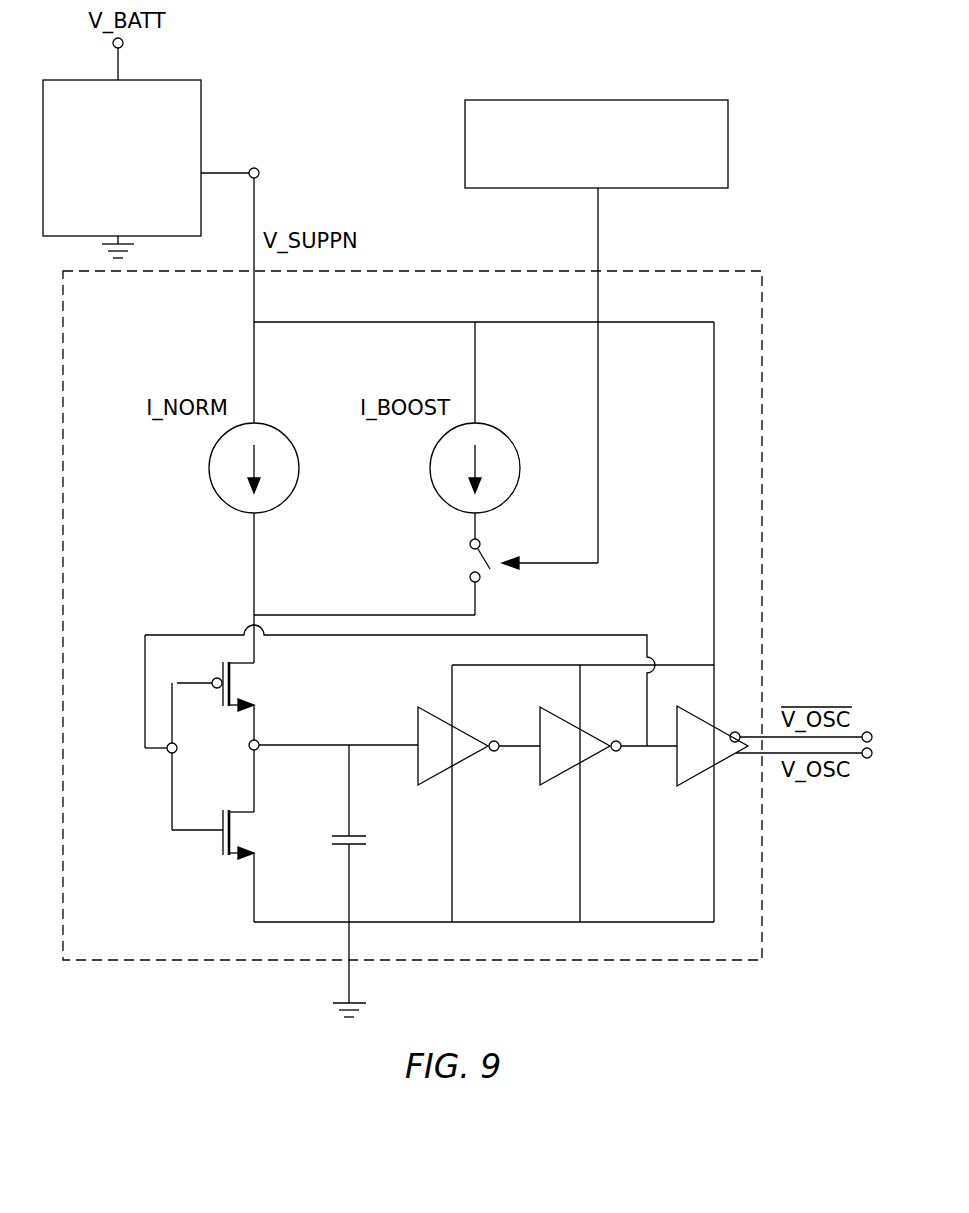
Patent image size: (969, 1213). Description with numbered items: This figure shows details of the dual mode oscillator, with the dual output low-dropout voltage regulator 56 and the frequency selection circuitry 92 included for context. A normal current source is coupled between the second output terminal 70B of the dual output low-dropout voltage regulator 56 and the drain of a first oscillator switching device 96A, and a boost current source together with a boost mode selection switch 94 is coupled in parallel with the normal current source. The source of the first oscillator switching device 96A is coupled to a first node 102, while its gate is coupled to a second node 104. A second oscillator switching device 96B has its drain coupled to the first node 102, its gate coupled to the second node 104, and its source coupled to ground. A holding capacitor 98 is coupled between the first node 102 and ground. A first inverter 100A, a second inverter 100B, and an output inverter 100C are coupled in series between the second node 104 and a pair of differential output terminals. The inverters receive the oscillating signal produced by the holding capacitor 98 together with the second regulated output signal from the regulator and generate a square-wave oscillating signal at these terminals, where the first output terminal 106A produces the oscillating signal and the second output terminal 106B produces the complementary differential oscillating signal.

The dual output low-dropout voltage regulator 56 is at (122, 158).
The second output terminal 70B is at (254, 167).
The frequency selection circuitry 92 is at (596, 144).
The boost mode selection switch 94 is at (462, 560).
The first oscillator switching device 96A is at (249, 686).
The second oscillator switching device 96B is at (254, 834).
The holding capacitor 98 is at (366, 840).
The first inverter 100A is at (458, 746).
The second inverter 100B is at (580, 746).
The output inverter 100C is at (712, 746).
The first node 102 is at (261, 752).
The second node 104 is at (165, 757).
The first output terminal 106A is at (867, 767).
The second output terminal 106B is at (867, 722).